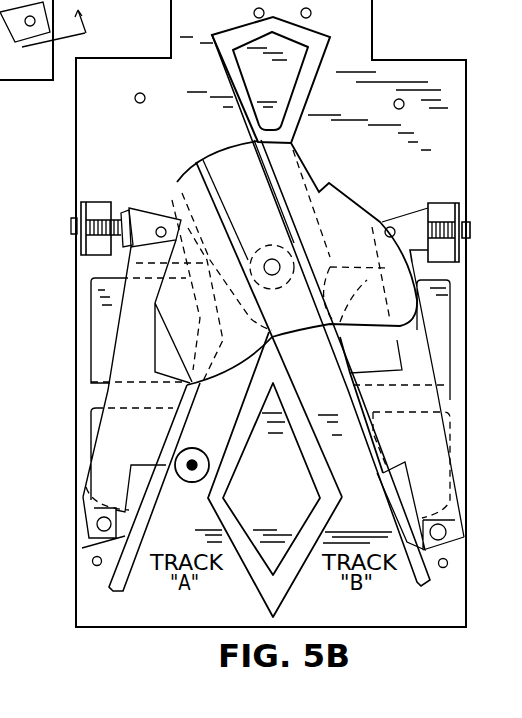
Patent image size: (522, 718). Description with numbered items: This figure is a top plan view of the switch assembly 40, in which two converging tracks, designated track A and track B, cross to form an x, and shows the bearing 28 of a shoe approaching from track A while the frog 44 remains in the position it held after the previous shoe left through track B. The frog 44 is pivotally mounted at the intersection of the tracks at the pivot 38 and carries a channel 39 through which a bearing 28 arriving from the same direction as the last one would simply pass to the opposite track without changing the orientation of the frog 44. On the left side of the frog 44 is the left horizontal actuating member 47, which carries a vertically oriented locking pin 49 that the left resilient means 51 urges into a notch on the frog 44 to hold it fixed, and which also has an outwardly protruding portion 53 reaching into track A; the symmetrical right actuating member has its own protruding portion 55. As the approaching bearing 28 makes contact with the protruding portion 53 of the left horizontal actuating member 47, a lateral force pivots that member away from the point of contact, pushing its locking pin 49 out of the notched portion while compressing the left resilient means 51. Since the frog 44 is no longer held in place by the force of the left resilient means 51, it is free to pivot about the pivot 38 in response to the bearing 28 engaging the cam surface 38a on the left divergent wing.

The bearing 28 is at (191, 482).
The pivot pin 38 is at (278, 275).
The cam surface 38a is at (203, 437).
The channel 39 is at (263, 238).
The switch assembly 40 is at (380, 201).
The frog 44 is at (219, 138).
The left horizontal actuating member 47 is at (110, 448).
The locking pin 49 is at (158, 226).
The left resilient means 51 is at (90, 262).
The protruding portion 53 is at (154, 451).
The protruding portion 55 is at (178, 220).